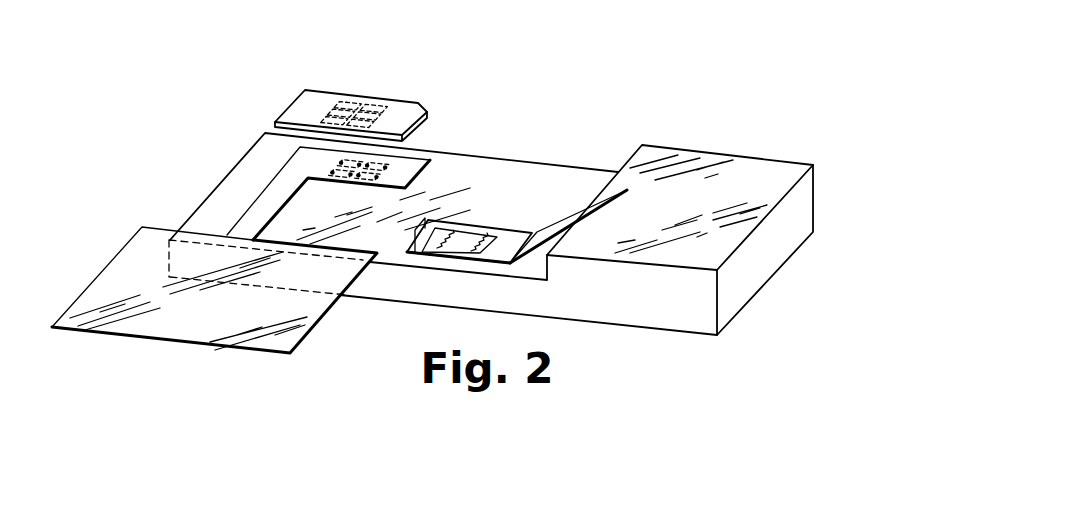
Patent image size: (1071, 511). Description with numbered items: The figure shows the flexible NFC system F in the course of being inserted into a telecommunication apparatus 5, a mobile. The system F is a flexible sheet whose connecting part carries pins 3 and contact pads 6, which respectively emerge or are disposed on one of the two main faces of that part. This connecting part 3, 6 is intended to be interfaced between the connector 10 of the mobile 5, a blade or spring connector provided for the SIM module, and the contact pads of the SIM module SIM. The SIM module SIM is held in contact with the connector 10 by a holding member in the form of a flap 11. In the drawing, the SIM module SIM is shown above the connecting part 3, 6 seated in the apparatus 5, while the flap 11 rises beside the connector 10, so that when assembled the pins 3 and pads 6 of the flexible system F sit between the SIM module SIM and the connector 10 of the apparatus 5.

The telecommunication apparatus 5 is at (757, 160).
The pins 3 is at (405, 168).
The contact pads 6 is at (342, 158).
The SIM module SIM is at (411, 111).
The connector 10 is at (476, 228).
The flap 11 is at (560, 217).
The flexible NFC system F is at (252, 352).